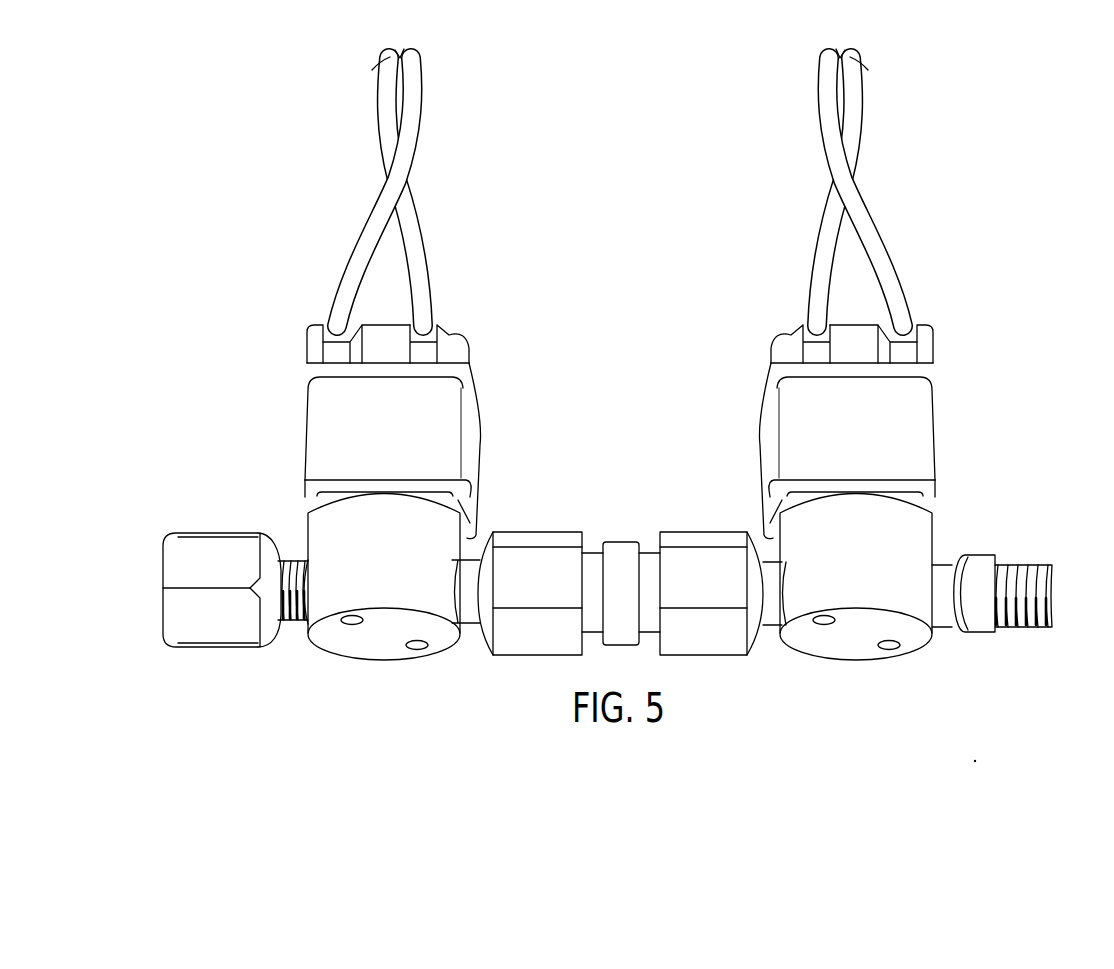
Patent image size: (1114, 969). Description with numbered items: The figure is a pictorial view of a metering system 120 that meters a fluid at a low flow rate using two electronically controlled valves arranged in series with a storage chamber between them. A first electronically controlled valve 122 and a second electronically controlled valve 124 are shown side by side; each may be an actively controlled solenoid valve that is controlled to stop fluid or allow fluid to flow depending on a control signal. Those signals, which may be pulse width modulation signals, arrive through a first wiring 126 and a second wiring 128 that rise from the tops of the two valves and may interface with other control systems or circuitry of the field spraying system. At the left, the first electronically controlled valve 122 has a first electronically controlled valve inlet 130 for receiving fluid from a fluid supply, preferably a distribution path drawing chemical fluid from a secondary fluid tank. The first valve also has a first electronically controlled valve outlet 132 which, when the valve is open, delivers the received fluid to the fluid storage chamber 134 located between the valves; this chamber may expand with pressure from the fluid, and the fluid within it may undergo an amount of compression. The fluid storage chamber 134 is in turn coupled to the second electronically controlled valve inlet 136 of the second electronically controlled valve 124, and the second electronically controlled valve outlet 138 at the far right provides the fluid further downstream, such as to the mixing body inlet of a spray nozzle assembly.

The metering system 120 is at (241, 143).
The first electronically controlled valve 122 is at (395, 587).
The second electronically controlled valve 124 is at (866, 592).
The first wiring 126 is at (437, 144).
The second wiring 128 is at (887, 148).
The first electronically controlled valve inlet 130 is at (201, 563).
The first electronically controlled valve outlet 132 is at (545, 572).
The fluid storage chamber 134 is at (620, 572).
The second electronically controlled valve inlet 136 is at (700, 572).
The second electronically controlled valve outlet 138 is at (1033, 590).